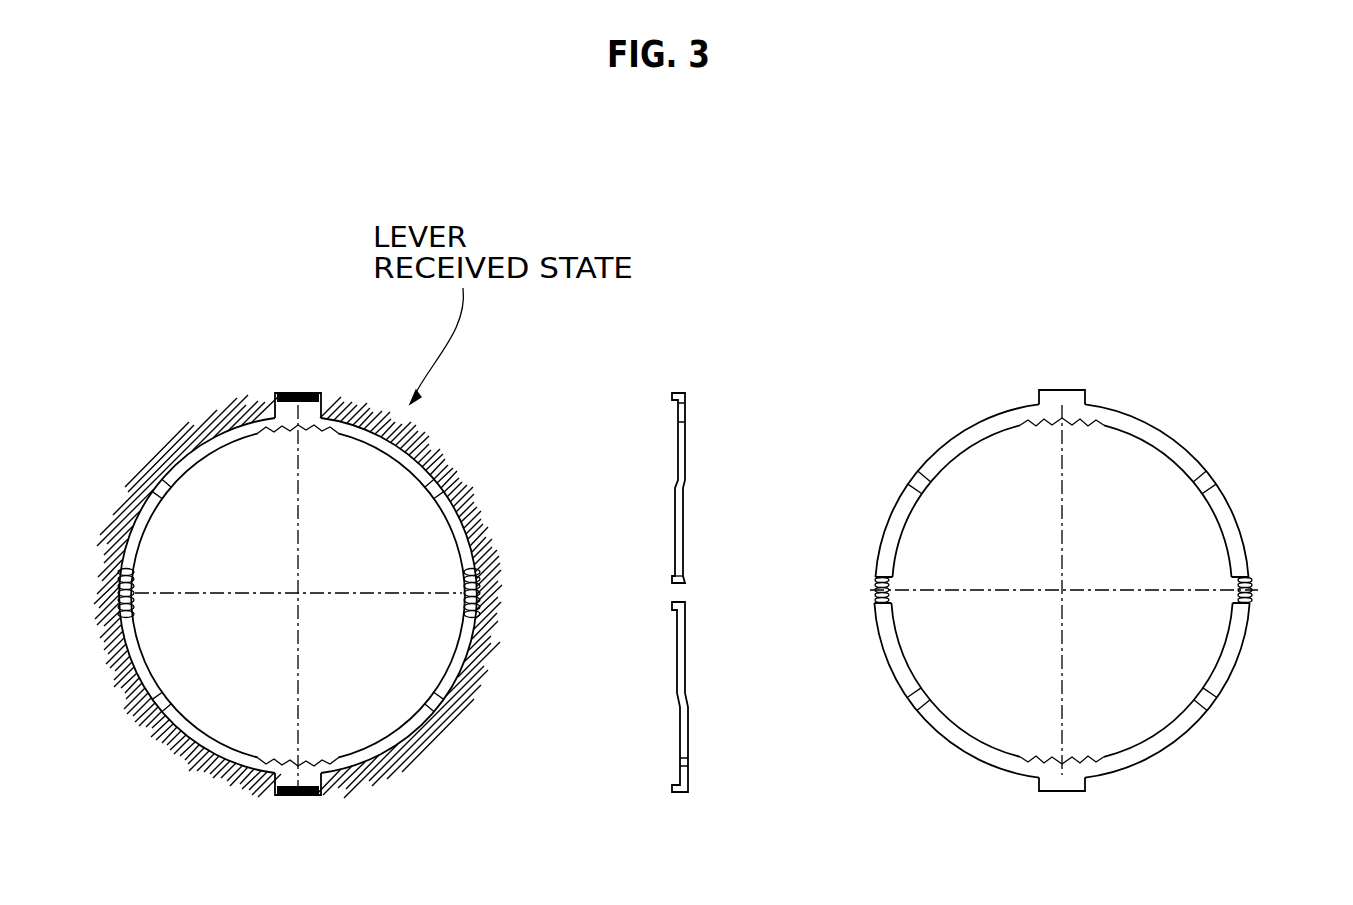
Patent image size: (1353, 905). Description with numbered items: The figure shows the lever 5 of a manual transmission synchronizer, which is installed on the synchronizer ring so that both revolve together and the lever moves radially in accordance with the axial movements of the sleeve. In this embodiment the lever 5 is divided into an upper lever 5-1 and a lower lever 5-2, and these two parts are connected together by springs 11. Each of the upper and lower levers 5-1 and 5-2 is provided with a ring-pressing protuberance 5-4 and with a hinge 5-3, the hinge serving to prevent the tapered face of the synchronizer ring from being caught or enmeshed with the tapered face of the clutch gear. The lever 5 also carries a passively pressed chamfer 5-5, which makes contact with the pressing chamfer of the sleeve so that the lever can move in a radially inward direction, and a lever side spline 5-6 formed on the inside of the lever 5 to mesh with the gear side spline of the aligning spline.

The lever 5 is at (633, 383).
The upper lever 5-1 is at (678, 453).
The lower lever 5-2 is at (672, 652).
The hinge 5-3 is at (915, 485).
The ring-pressing protuberance 5-4 is at (672, 582).
The passively pressed chamfer 5-5 is at (300, 392).
The lever side spline 5-6 is at (1040, 422).
The springs 11 is at (1252, 590).